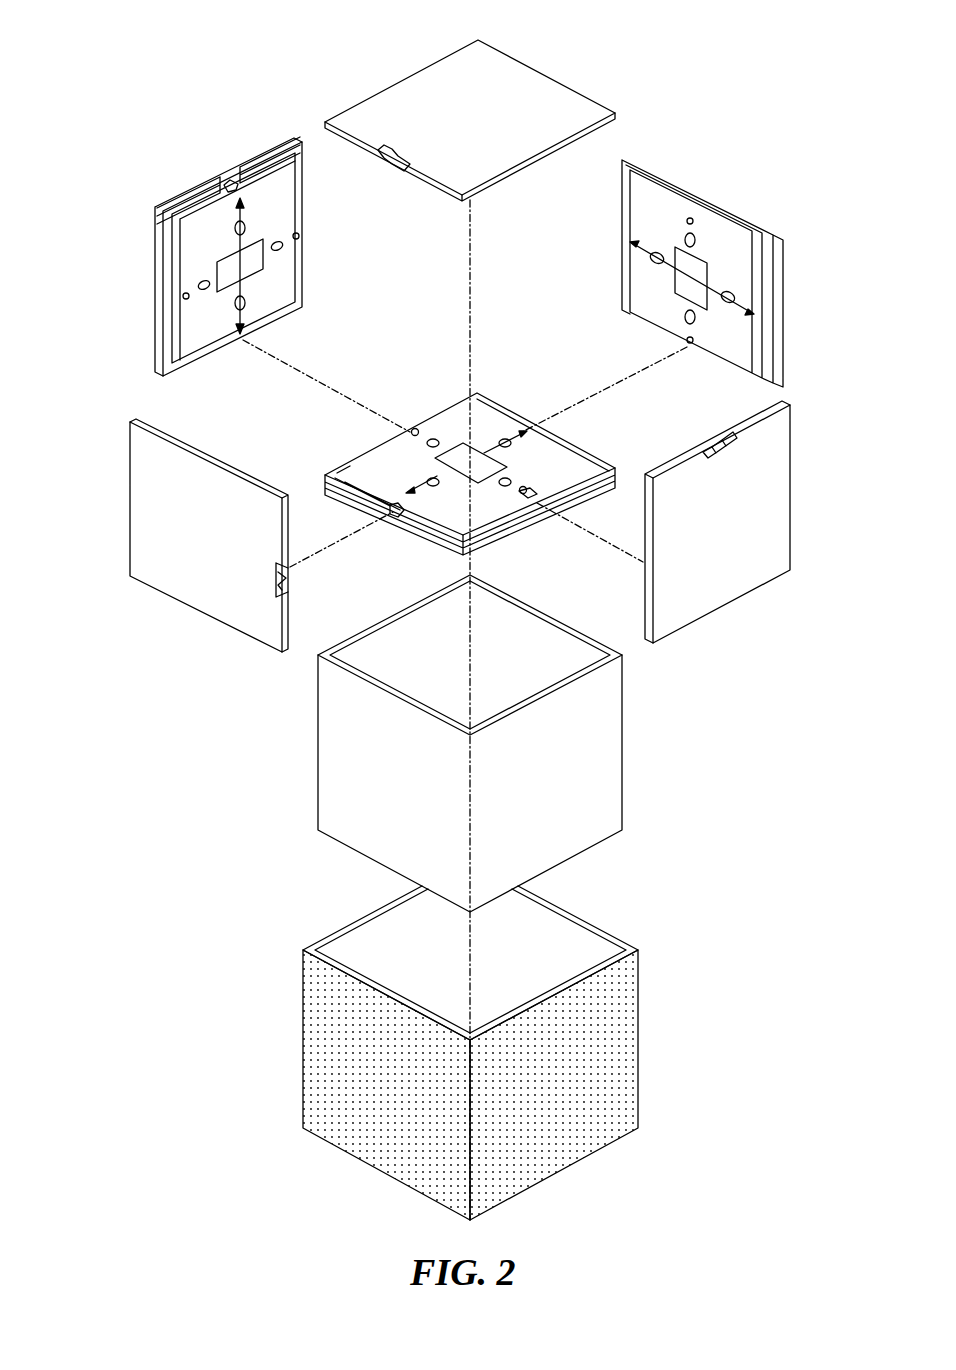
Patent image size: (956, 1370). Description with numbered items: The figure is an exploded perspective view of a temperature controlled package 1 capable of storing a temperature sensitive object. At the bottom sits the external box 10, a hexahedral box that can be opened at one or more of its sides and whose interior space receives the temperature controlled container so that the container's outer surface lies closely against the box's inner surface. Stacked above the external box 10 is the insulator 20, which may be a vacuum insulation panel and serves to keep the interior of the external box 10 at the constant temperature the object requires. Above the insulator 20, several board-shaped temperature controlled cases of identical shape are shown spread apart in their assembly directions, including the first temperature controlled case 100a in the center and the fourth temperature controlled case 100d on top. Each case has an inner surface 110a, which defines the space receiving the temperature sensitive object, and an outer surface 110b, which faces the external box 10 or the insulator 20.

The temperature controlled package 1 is at (217, 75).
The external box 10 is at (588, 1035).
The insulator 20 is at (575, 737).
The first temperature controlled case 100a is at (412, 363).
The fourth temperature controlled case 100d is at (558, 67).
The inner surface 110a is at (205, 330).
The outer surface 110b is at (177, 495).